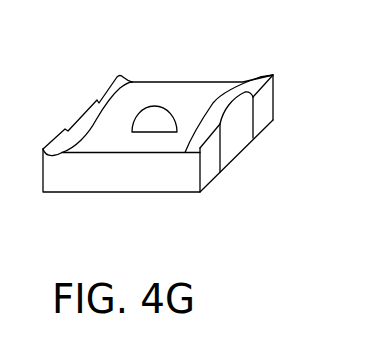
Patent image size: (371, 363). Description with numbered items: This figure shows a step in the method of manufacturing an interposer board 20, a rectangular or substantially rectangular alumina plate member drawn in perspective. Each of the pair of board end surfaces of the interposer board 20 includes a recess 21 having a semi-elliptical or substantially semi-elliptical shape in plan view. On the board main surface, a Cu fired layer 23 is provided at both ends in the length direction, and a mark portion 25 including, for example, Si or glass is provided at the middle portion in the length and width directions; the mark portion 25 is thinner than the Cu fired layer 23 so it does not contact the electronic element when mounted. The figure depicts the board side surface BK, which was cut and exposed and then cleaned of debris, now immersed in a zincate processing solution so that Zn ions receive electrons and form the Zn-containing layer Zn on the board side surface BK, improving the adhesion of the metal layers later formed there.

The interposer board 20 is at (72, 175).
The recess 21 is at (88, 119).
The Cu fired layer 23 is at (122, 89).
The mark portion 25 is at (158, 113).
The Zn-containing layer Zn is at (277, 105).
The board side surface BK is at (205, 181).